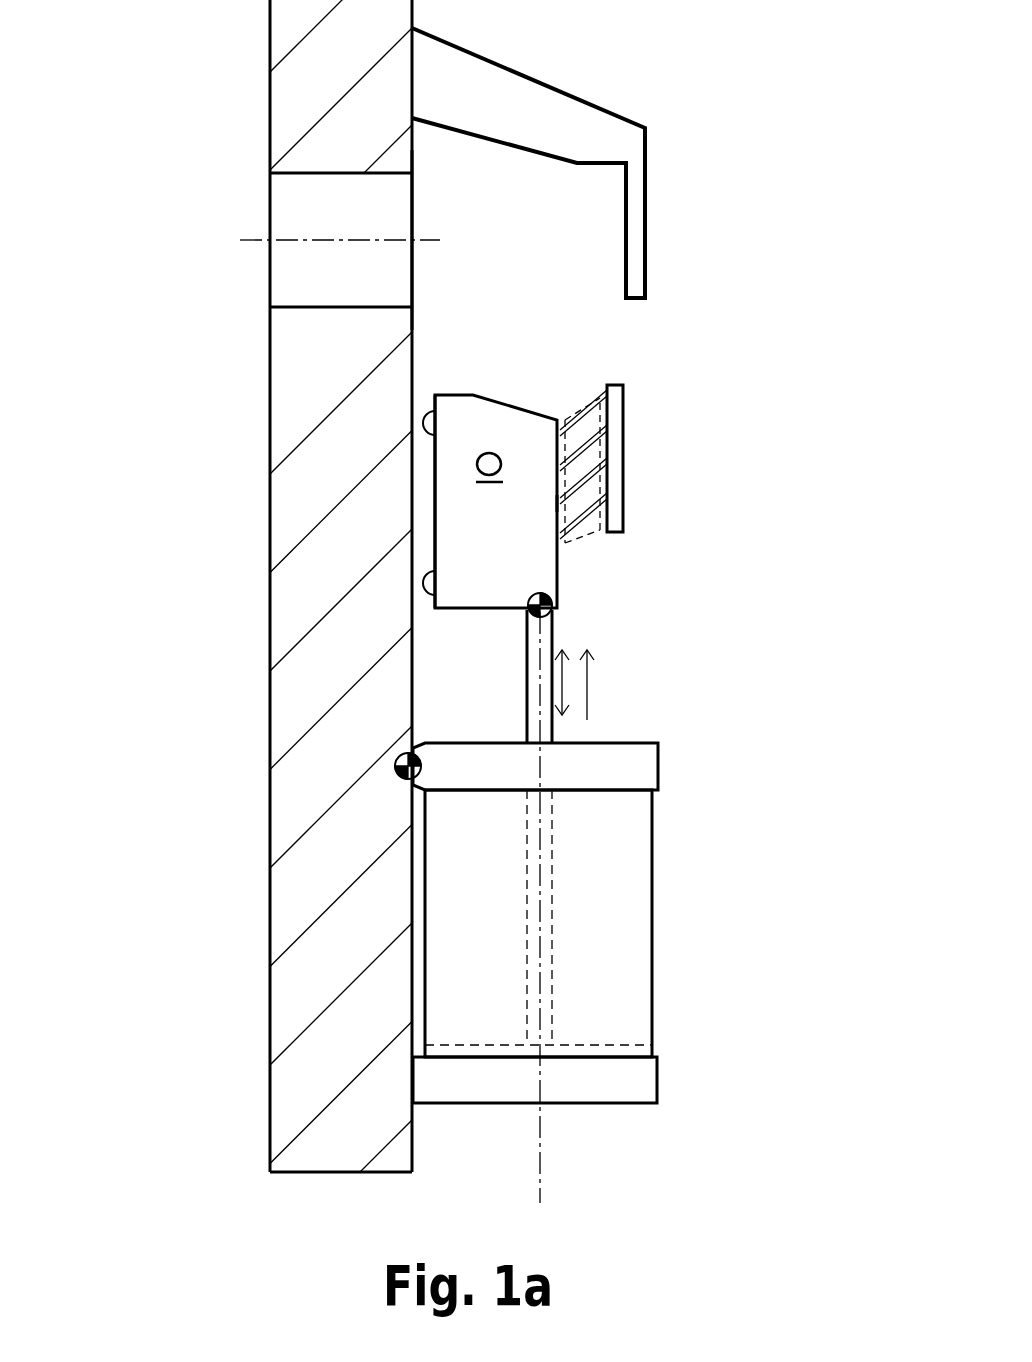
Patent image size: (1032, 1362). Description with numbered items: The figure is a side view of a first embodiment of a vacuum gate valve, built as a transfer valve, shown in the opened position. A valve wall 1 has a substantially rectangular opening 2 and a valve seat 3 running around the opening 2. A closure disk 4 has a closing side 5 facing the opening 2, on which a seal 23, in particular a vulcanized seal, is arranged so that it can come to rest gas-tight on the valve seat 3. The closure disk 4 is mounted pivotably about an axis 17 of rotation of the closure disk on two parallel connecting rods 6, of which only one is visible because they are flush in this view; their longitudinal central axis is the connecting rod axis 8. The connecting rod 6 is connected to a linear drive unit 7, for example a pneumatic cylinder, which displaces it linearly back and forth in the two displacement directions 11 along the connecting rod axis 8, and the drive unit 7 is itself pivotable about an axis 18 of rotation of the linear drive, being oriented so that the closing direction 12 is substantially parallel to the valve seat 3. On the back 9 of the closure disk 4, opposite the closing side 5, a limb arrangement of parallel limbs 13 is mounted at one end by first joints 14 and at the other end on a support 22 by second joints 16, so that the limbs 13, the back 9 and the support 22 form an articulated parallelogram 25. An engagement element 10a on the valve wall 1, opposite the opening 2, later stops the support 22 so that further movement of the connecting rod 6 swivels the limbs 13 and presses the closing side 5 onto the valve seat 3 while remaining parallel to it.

The valve wall 1 is at (297, 67).
The opening 2 is at (320, 203).
The valve seat 3 is at (412, 160).
The engagement element 10a is at (633, 218).
The closure disk 4 is at (485, 532).
The closing side 5 is at (434, 487).
The seal 23 is at (425, 424).
The support 22 is at (613, 403).
The second joint 16 is at (607, 460).
The limbs 13 is at (582, 485).
The first joint 14 is at (557, 503).
The parallelogram 25 is at (585, 543).
The axis of rotation of the closure disk 17 is at (528, 610).
The back 9 is at (572, 597).
The connecting rod 6 is at (533, 663).
The connecting rod axis 8 is at (538, 713).
The closing direction 12 is at (587, 677).
The displacement direction 11 is at (562, 697).
The axis of rotation of the linear drive 18 is at (400, 773).
The linear drive unit 7 is at (475, 930).